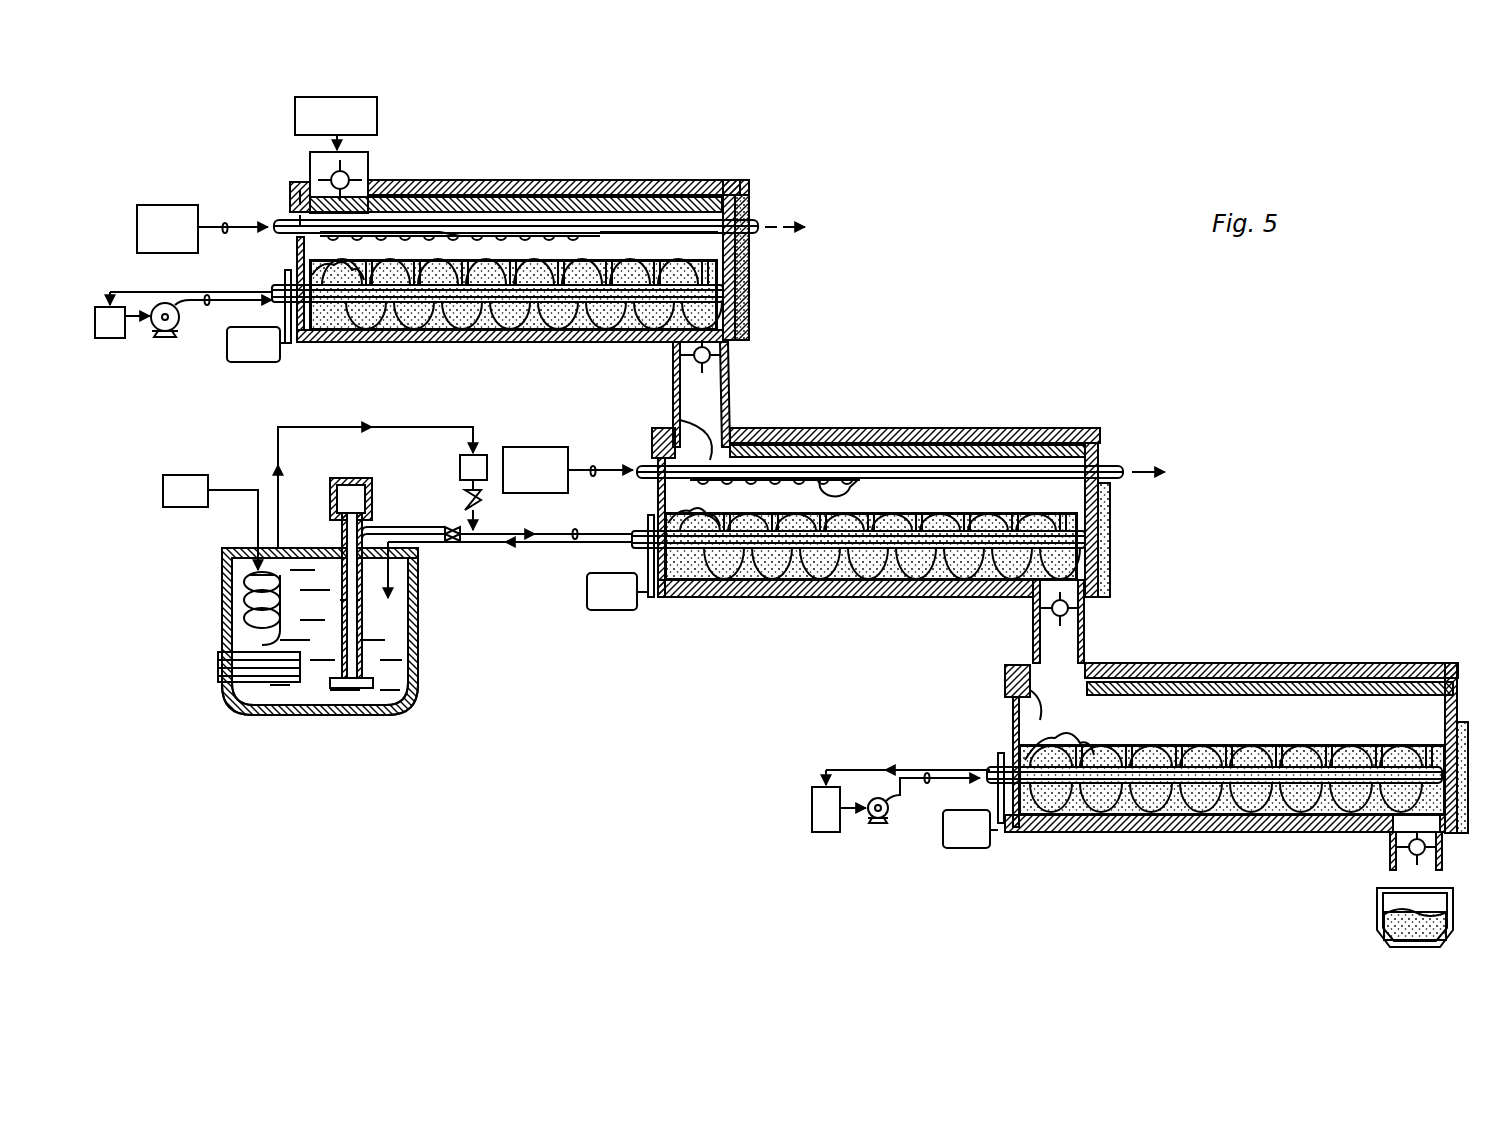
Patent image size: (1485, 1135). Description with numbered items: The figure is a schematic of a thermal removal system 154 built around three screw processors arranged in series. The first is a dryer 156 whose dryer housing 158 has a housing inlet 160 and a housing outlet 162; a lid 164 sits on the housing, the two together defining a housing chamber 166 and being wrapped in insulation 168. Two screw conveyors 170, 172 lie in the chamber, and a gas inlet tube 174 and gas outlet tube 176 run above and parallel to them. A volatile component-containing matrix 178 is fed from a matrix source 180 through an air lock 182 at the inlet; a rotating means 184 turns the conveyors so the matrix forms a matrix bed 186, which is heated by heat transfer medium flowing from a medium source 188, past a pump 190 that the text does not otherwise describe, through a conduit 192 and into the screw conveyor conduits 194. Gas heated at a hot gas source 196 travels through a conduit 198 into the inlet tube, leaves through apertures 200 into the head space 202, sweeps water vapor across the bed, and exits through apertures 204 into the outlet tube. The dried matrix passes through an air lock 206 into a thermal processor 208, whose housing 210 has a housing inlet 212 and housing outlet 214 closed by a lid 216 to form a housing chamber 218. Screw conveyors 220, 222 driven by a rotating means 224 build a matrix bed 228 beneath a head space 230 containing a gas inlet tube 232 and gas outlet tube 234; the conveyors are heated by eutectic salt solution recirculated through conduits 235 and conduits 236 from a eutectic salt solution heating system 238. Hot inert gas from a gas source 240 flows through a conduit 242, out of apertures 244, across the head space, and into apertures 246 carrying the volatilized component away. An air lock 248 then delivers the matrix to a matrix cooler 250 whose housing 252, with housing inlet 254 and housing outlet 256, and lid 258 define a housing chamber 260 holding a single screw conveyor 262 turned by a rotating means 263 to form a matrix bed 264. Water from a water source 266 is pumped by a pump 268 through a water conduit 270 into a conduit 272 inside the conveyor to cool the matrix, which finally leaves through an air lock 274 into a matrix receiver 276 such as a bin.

The thermal removal system 154 is at (930, 315).
The dryer 156 is at (544, 251).
The dryer housing 158 is at (745, 262).
The housing inlet 160 is at (312, 185).
The housing outlet 162 is at (740, 318).
The lid 164 is at (578, 204).
The housing chamber 166 is at (528, 302).
The insulation 168 is at (645, 186).
The screw conveyor 170 is at (450, 300).
The screw conveyor 172 is at (588, 310).
The gas inlet tube 174 is at (438, 228).
The gas outlet tube 176 is at (614, 230).
The volatile component-containing matrix 178 is at (305, 250).
The matrix source 180 is at (318, 128).
The air lock 182 is at (335, 173).
The rotating means 184 is at (266, 362).
The matrix bed 186 is at (378, 332).
The medium source 188 is at (112, 338).
The pump 190 is at (178, 335).
The conduit 192 is at (208, 306).
The screw conveyor conduits 194 is at (330, 332).
The hot gas source 196 is at (148, 240).
The conduit 198 is at (226, 222).
The apertures 200 is at (395, 226).
The head space 202 is at (510, 250).
The apertures 204 is at (458, 233).
The air lock 206 is at (718, 360).
The thermal processor 208 is at (906, 504).
The housing 210 is at (1100, 514).
The housing inlet 212 is at (675, 428).
The housing outlet 214 is at (1098, 572).
The lid 216 is at (1092, 440).
The housing chamber 218 is at (838, 572).
The screw conveyor 220 is at (740, 560).
The screw conveyor 222 is at (940, 555).
The rotating means 224 is at (585, 600).
The matrix bed 228 is at (690, 580).
The head space 230 is at (940, 495).
The gas inlet tube 232 is at (753, 460).
The gas outlet tube 234 is at (1040, 475).
The conduits 235 is at (790, 570).
The conduits 236 is at (573, 540).
The eutectic salt solution heating system 238 is at (218, 620).
The gas source 240 is at (512, 483).
The conduit 242 is at (596, 466).
The apertures 244 is at (808, 480).
The apertures 246 is at (865, 430).
The air lock 248 is at (1080, 616).
The matrix cooler 250 is at (1187, 750).
The housing 252 is at (1462, 700).
The housing inlet 254 is at (1010, 707).
The housing outlet 256 is at (1392, 845).
The lid 258 is at (1265, 690).
The housing chamber 260 is at (1222, 731).
The screw conveyor 262 is at (1205, 832).
The rotating means 263 is at (968, 848).
The matrix bed 264 is at (1115, 815).
The water source 266 is at (812, 825).
The pump 268 is at (865, 820).
The water conduit 270 is at (926, 785).
The conduit 272 is at (1048, 818).
The air lock 274 is at (1405, 860).
The matrix receiver 276 is at (1377, 925).